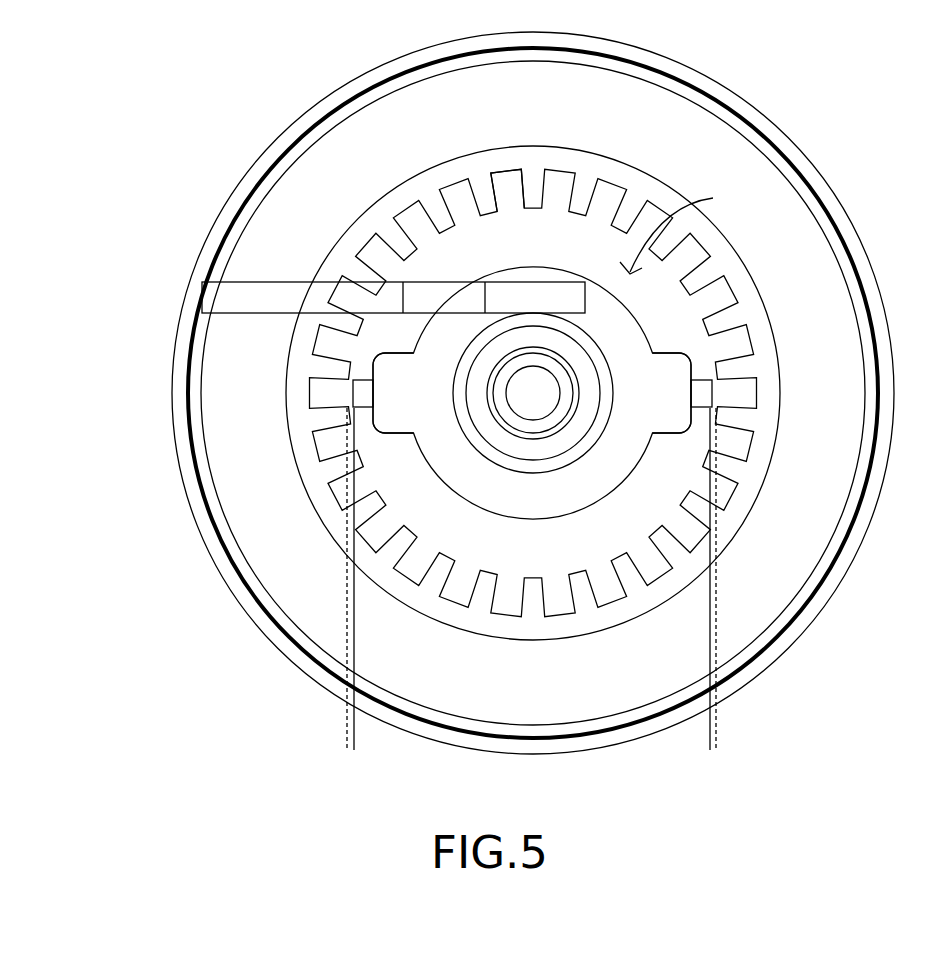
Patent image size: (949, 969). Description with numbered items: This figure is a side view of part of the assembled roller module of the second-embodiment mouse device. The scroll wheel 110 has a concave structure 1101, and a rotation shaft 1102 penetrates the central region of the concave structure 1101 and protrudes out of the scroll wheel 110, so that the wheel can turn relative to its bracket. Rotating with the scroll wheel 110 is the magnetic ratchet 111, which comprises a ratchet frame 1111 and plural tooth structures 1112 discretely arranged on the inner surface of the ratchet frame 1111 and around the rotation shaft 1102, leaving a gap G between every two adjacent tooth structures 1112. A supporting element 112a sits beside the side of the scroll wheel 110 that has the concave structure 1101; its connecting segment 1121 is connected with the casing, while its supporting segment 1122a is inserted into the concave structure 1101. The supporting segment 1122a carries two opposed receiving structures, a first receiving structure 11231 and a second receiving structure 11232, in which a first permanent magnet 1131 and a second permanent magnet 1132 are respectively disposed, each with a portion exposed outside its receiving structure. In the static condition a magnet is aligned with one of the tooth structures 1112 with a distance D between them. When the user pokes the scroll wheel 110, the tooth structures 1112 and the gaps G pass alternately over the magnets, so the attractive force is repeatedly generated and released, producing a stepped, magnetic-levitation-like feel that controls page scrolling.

The scroll wheel 110 is at (409, 372).
The concave structure 1101 is at (695, 227).
The rotation shaft 1102 is at (535, 396).
The magnetic ratchet 111 is at (533, 351).
The ratchet frame 1111 is at (530, 158).
The tooth structures 1112 is at (490, 159).
The supporting element 112a is at (487, 461).
The connecting segment 1121 is at (278, 298).
The supporting segment 1122a is at (485, 480).
The first receiving structure 11231 is at (395, 385).
The second receiving structure 11232 is at (668, 385).
The first permanent magnet 1131 is at (362, 390).
The second permanent magnet 1132 is at (703, 390).
The distance D is at (380, 739).
The gap G is at (613, 596).